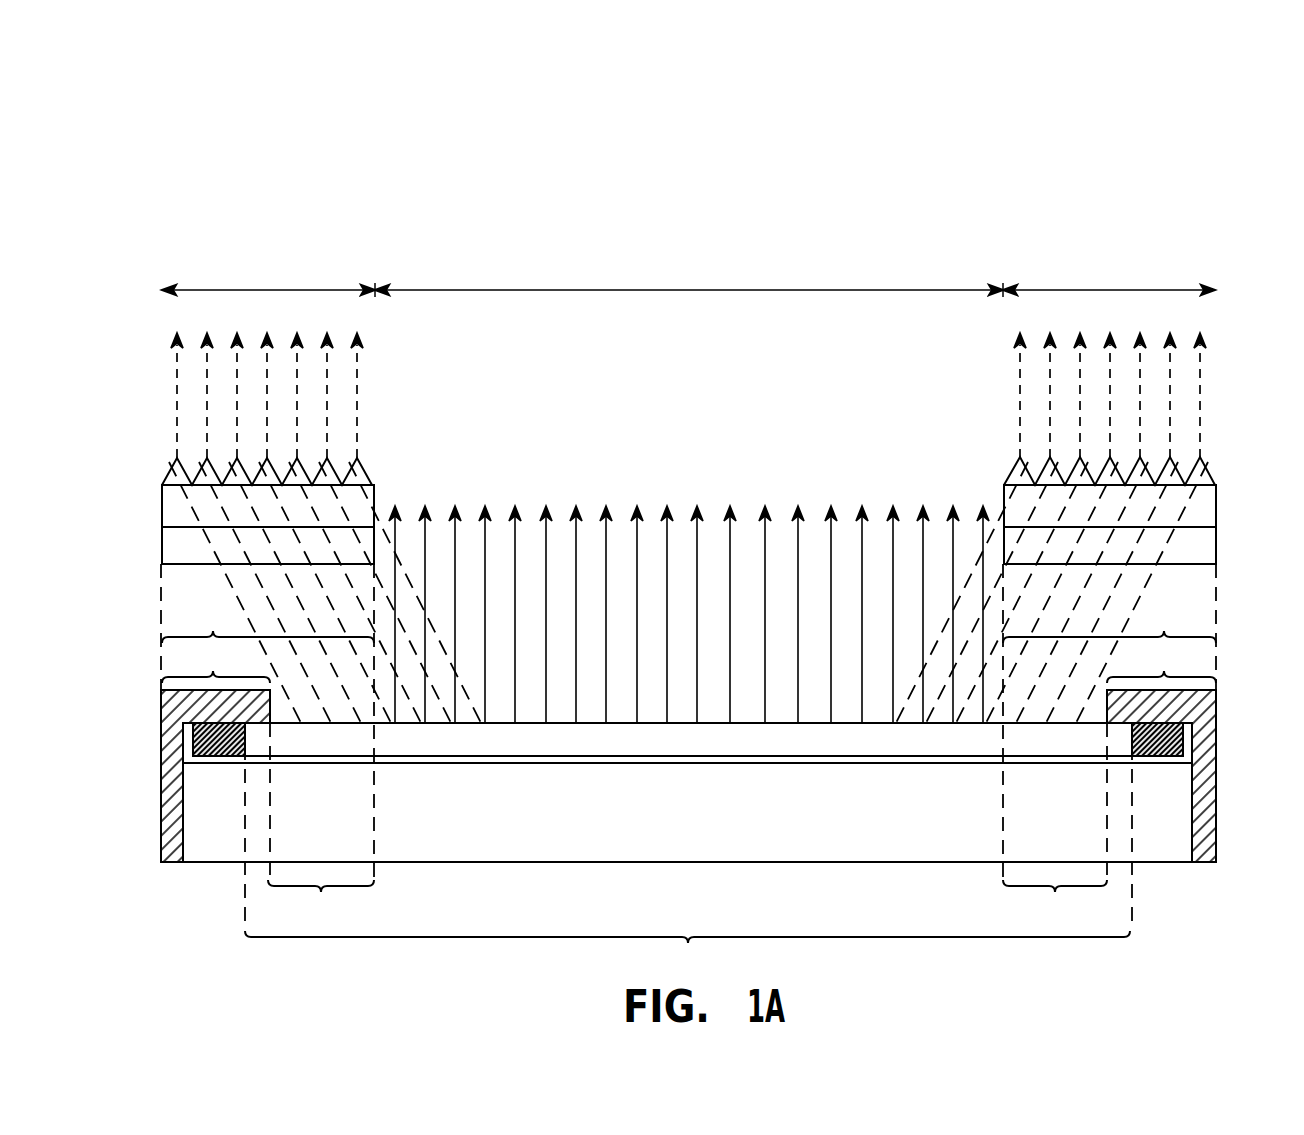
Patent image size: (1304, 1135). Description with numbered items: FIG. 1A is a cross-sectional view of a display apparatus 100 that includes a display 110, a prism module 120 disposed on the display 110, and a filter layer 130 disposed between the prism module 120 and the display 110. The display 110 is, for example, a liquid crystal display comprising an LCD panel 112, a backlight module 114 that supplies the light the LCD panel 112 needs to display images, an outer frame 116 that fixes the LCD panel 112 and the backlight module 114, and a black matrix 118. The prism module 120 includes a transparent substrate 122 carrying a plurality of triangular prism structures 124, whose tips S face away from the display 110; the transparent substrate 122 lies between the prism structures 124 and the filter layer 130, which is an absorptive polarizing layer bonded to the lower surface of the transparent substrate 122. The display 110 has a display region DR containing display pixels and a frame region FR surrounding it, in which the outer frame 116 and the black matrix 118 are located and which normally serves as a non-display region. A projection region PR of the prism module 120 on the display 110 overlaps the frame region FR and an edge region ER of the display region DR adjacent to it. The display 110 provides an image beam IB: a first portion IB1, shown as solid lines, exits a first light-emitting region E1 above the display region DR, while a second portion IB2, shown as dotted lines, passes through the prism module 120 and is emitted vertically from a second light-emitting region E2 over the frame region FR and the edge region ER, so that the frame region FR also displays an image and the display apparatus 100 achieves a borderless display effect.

The display apparatus 100 is at (1302, 990).
The display 110 is at (145, 110).
The LCD panel 112 is at (1250, 712).
The backlight module 114 is at (1250, 847).
The outer frame 116 is at (1250, 806).
The black matrix 118 is at (1250, 742).
The prism module 120 is at (287, 122).
The transparent substrate 122 is at (1250, 511).
The prism structures 124 is at (1250, 467).
The filter layer 130 is at (172, 549).
The image beam IB is at (415, 122).
The first portion of the image beam IB1 is at (766, 535).
The second portion of the image beam IB2 is at (1253, 369).
The tips S is at (357, 458).
The first light-emitting region E1 is at (689, 274).
The second light-emitting region E2 is at (688, 273).
The projection region PR is at (689, 618).
The frame region FR is at (689, 659).
The edge region ER is at (687, 906).
The display region DR is at (687, 958).